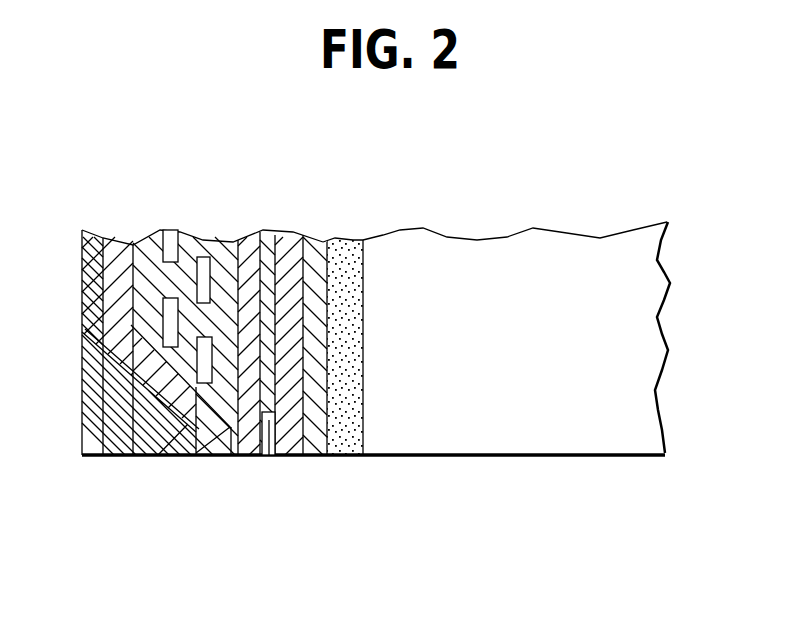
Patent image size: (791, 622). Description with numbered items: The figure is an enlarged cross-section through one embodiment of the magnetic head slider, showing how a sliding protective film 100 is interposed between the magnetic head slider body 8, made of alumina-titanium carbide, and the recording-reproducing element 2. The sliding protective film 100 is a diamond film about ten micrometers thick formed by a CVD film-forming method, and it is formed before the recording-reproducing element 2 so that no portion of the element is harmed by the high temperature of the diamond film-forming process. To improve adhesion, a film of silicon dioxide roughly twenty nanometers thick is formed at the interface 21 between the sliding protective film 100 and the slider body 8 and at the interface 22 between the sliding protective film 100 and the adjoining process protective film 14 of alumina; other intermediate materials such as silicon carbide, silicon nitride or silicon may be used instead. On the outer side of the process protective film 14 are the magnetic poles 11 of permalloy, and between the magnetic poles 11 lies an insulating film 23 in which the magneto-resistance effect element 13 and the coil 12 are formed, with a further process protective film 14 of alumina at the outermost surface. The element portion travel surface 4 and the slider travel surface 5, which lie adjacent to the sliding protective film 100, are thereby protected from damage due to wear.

The recording-reproducing element 2 is at (77, 126).
The element portion travel surface 4 is at (327, 537).
The slider travel surface 5 is at (665, 462).
The magnetic head slider body 8 is at (515, 265).
The magnetic poles 11 is at (283, 455).
The coil 12 is at (145, 455).
The magneto-resistance effect element 13 is at (287, 455).
The process protective film 14 is at (73, 233).
The interface 21 is at (383, 240).
The interface 22 is at (313, 233).
The insulating film 23 is at (240, 242).
The sliding protective film 100 is at (353, 240).